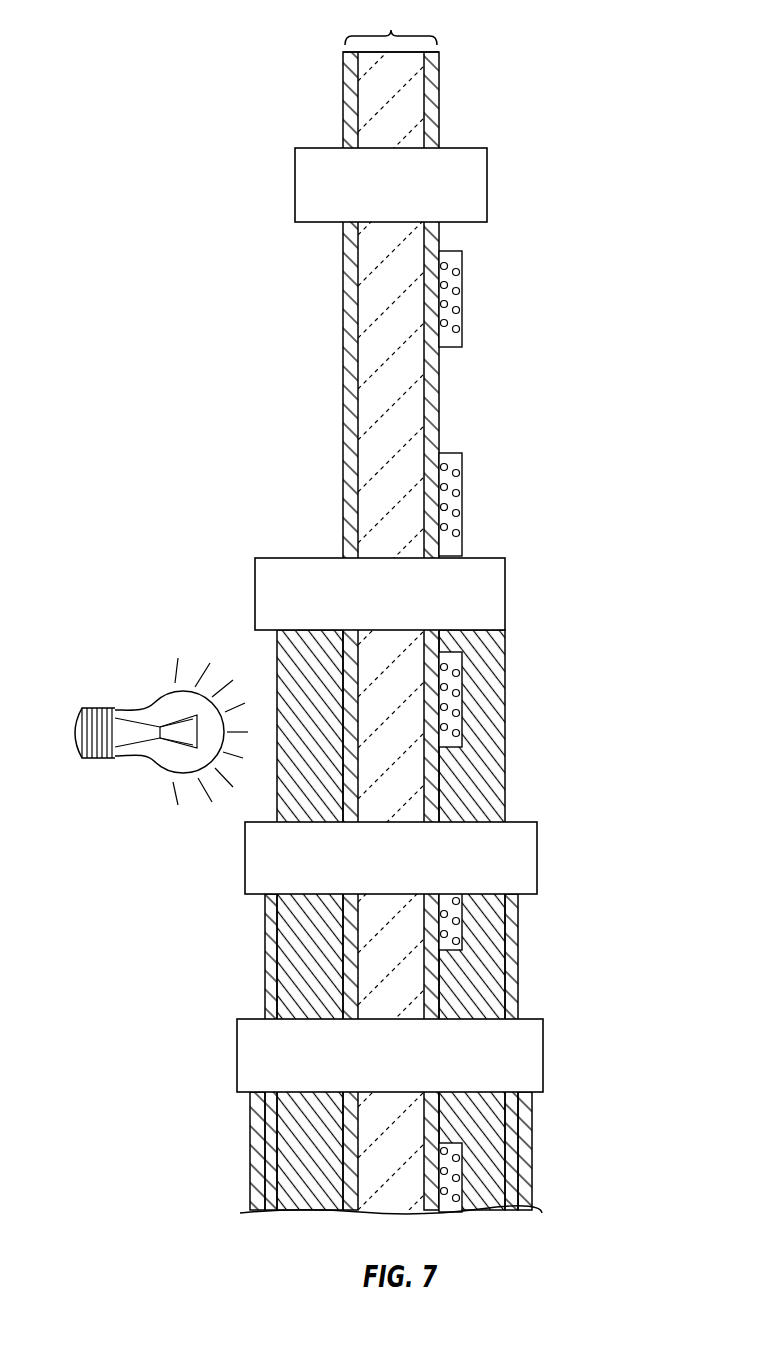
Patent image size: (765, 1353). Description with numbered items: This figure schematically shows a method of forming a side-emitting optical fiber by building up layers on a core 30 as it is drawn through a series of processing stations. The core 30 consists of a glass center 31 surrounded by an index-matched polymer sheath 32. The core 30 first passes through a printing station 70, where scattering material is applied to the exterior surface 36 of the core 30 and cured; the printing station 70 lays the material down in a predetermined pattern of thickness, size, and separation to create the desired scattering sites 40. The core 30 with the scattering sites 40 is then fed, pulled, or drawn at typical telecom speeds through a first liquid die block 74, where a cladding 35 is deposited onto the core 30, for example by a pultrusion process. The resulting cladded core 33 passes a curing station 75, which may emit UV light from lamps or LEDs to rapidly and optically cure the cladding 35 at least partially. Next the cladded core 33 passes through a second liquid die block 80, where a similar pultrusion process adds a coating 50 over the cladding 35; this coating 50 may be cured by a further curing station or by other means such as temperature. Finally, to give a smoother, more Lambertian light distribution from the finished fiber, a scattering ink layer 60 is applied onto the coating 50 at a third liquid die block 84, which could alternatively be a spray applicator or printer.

The core 30 is at (391, 27).
The glass center 31 is at (402, 88).
The index-matched polymer sheath 32 is at (352, 72).
The cladded core 33 is at (522, 733).
The cladding 35 is at (305, 662).
The exterior surface 36 is at (439, 107).
The scattering sites 40 is at (473, 295).
The coating 50 is at (270, 955).
The scattering ink layer 60 is at (257, 1153).
The printing station 70 is at (487, 183).
The first liquid die block 74 is at (505, 591).
The curing station 75 is at (163, 702).
The second liquid die block 80 is at (537, 860).
The third liquid die block 84 is at (545, 1062).